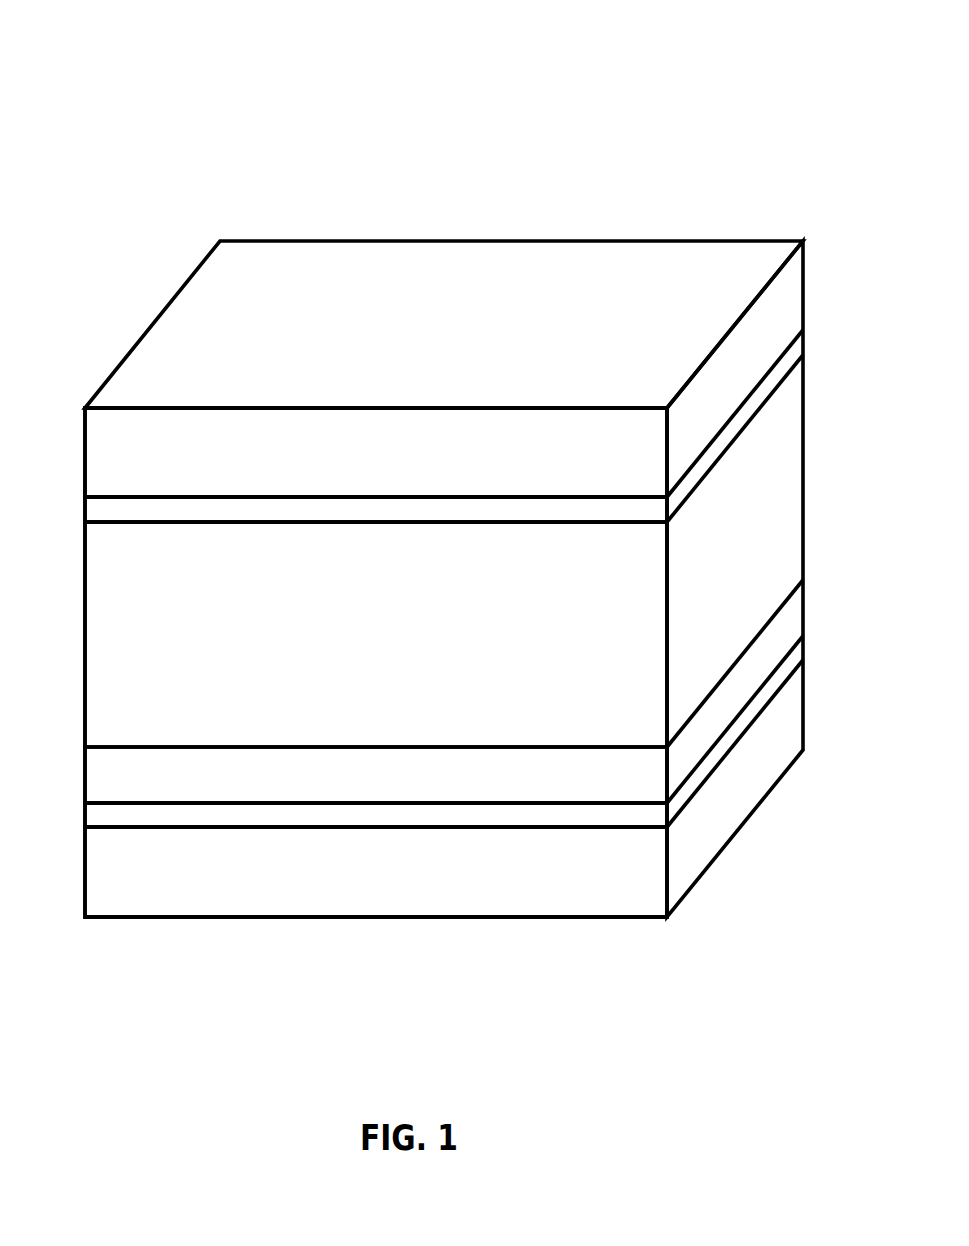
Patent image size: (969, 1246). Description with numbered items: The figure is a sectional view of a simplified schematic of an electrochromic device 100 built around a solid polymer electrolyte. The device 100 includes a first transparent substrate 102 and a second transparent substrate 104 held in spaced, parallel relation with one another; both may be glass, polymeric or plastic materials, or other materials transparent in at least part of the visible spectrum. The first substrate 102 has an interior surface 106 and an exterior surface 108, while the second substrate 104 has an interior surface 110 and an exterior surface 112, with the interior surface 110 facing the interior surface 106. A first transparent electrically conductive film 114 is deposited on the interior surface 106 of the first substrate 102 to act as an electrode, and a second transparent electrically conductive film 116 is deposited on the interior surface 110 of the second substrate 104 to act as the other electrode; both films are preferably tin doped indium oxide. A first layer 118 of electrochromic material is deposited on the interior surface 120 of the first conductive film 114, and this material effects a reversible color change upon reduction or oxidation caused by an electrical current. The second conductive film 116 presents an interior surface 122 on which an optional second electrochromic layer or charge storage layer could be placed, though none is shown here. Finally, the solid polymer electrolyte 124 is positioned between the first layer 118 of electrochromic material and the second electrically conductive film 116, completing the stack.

The electrochromic device 100 is at (222, 86).
The first transparent substrate 102 is at (357, 892).
The second transparent substrate 104 is at (357, 466).
The interior surface 106 is at (233, 841).
The exterior surface 108 is at (308, 931).
The interior surface 110 is at (624, 488).
The exterior surface 112 is at (719, 250).
The first transparent electrically conductive film 114 is at (563, 812).
The second transparent electrically conductive film 116 is at (170, 510).
The first layer of electrochromic material 118 is at (357, 790).
The interior surface 120 is at (128, 792).
The interior surface 122 is at (121, 536).
The solid polymer electrolyte 124 is at (357, 652).